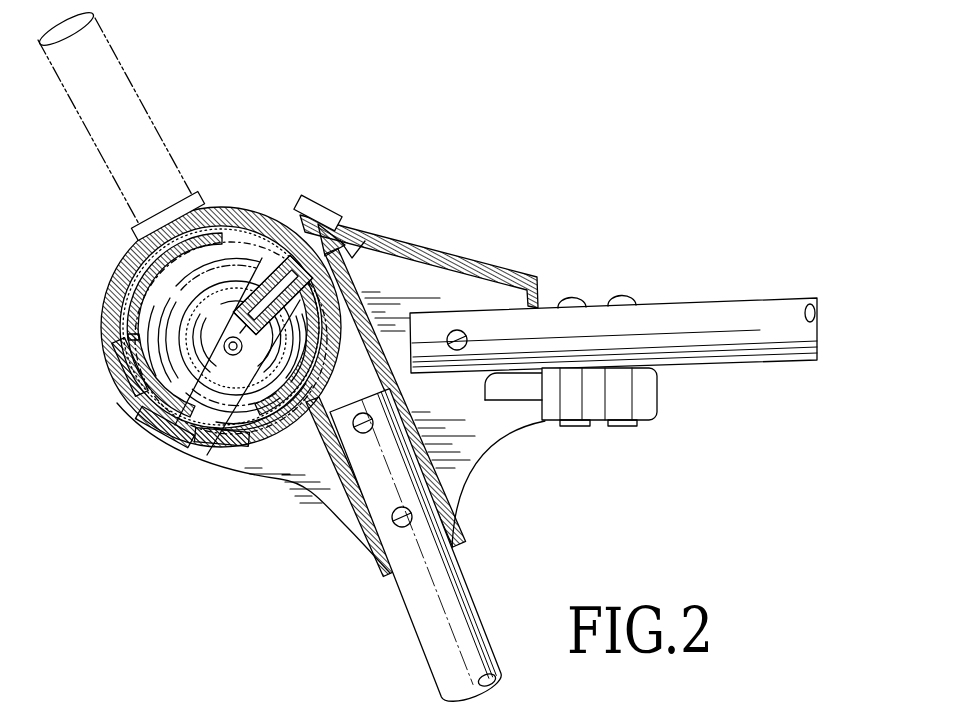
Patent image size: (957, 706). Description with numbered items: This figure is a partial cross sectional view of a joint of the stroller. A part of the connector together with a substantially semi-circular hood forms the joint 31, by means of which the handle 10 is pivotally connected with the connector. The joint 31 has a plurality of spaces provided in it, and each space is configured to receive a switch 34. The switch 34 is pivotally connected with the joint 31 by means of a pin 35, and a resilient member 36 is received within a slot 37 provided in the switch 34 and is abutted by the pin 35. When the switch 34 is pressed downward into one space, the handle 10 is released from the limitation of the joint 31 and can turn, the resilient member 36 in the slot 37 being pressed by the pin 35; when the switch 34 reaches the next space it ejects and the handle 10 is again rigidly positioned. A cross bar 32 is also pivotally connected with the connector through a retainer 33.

The handle 10 is at (139, 110).
The joint 31 is at (106, 322).
The cross bar 32 is at (702, 308).
The retainer 33 is at (648, 398).
The switch 34 is at (312, 206).
The pin 35 is at (232, 349).
The resilient member 36 is at (289, 262).
The slot 37 is at (268, 266).